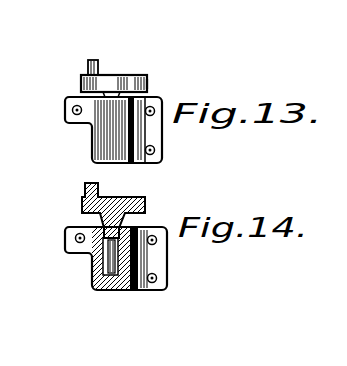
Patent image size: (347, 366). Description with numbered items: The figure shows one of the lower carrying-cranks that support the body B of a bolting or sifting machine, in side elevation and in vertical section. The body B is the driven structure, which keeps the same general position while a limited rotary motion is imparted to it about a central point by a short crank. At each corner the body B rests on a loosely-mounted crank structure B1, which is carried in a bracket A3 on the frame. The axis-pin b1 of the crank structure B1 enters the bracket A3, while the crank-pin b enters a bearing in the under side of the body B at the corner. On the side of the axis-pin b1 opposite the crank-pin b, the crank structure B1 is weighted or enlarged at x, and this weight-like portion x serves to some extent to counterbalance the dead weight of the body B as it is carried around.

In FIG. 13, the bracket A3 is at (2, 160).
In FIG. 14, the bracket A3 is at (95, 268).
In FIG. 13, the crank structure B1 is at (111, 88).
In FIG. 14, the body B is at (118, 196).
In FIG. 13, the crank-pin b is at (88, 62).
In FIG. 14, the crank-pin b is at (85, 187).
In FIG. 14, the axis-pin b1 is at (157, 279).
In FIG. 13, the weighted portion x is at (148, 83).
In FIG. 14, the weighted portion x is at (147, 204).